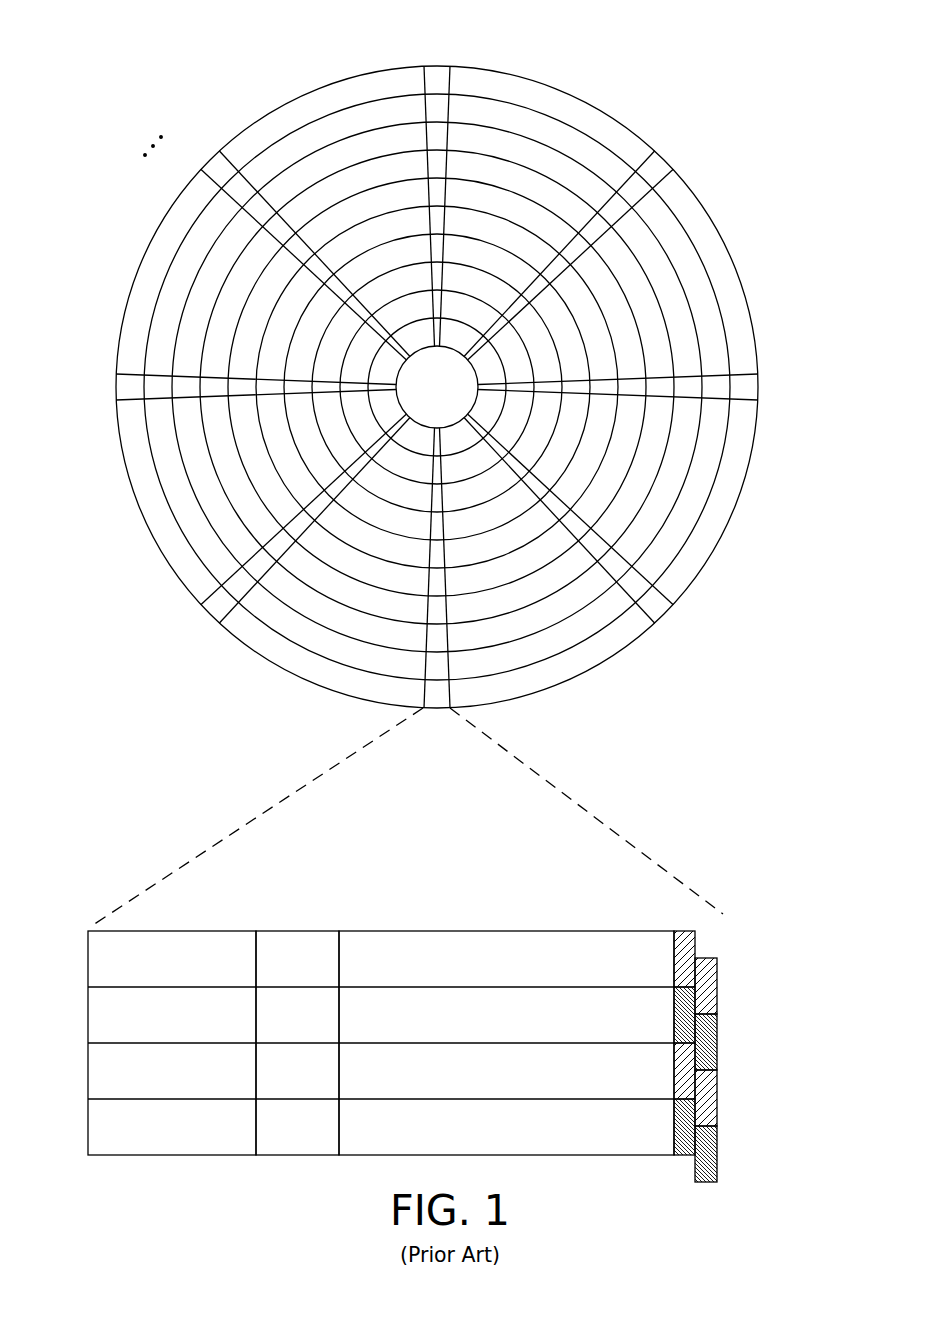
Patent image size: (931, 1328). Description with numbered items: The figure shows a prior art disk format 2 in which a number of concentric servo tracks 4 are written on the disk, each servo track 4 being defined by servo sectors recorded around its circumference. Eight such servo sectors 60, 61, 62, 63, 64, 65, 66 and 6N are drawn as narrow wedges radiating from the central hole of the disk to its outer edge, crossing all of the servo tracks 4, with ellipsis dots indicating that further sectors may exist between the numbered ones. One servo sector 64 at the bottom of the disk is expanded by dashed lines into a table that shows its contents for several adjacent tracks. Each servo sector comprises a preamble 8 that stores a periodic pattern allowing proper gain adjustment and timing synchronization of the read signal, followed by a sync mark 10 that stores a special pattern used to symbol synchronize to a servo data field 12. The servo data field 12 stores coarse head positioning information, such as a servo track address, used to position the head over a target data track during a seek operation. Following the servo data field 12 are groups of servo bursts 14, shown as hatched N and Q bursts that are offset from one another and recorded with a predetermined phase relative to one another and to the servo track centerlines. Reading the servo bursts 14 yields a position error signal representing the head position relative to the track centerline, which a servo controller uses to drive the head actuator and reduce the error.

The disk format 2 is at (438, 397).
The servo track 4 is at (547, 128).
The servo sector 60 is at (438, 76).
The servo sector 61 is at (655, 168).
The servo sector 62 is at (750, 387).
The servo sector 63 is at (655, 607).
The servo sector 64 is at (294, 783).
The servo sector 65 is at (213, 607).
The servo sector 66 is at (122, 385).
The servo sector 6N is at (218, 163).
The preamble 8 is at (180, 930).
The sync mark 10 is at (300, 930).
The servo data field 12 is at (495, 930).
The servo bursts 14 is at (712, 928).